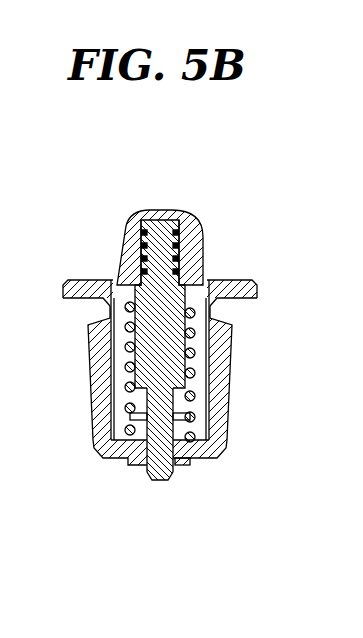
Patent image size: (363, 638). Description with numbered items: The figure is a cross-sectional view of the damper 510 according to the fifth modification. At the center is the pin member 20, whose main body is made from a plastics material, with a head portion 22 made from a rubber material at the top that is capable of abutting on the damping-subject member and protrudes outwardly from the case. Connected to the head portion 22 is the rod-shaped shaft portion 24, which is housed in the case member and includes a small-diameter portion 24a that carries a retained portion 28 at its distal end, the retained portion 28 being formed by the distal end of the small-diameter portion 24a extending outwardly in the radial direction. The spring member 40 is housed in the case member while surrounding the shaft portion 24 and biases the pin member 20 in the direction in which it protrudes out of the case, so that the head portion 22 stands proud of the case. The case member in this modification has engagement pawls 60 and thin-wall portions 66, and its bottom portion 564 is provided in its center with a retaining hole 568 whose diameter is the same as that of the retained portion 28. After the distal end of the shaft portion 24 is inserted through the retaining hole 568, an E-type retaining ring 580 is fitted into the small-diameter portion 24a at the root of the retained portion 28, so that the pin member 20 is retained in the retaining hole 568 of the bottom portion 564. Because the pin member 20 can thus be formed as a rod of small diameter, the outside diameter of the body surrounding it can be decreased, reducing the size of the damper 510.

The damper 510 is at (193, 571).
The head portion 22 is at (193, 238).
The pin member 20 is at (161, 342).
The shaft portion 24 is at (150, 366).
The small-diameter portion 24a is at (191, 416).
The retained portion 28 is at (160, 480).
The spring member 40 is at (197, 404).
The thin-wall portions 66 is at (216, 306).
The engagement pawls 60 is at (229, 325).
The retaining hole 568 is at (103, 452).
The bottom portion 564 is at (205, 460).
The E-type retaining ring 580 is at (185, 466).